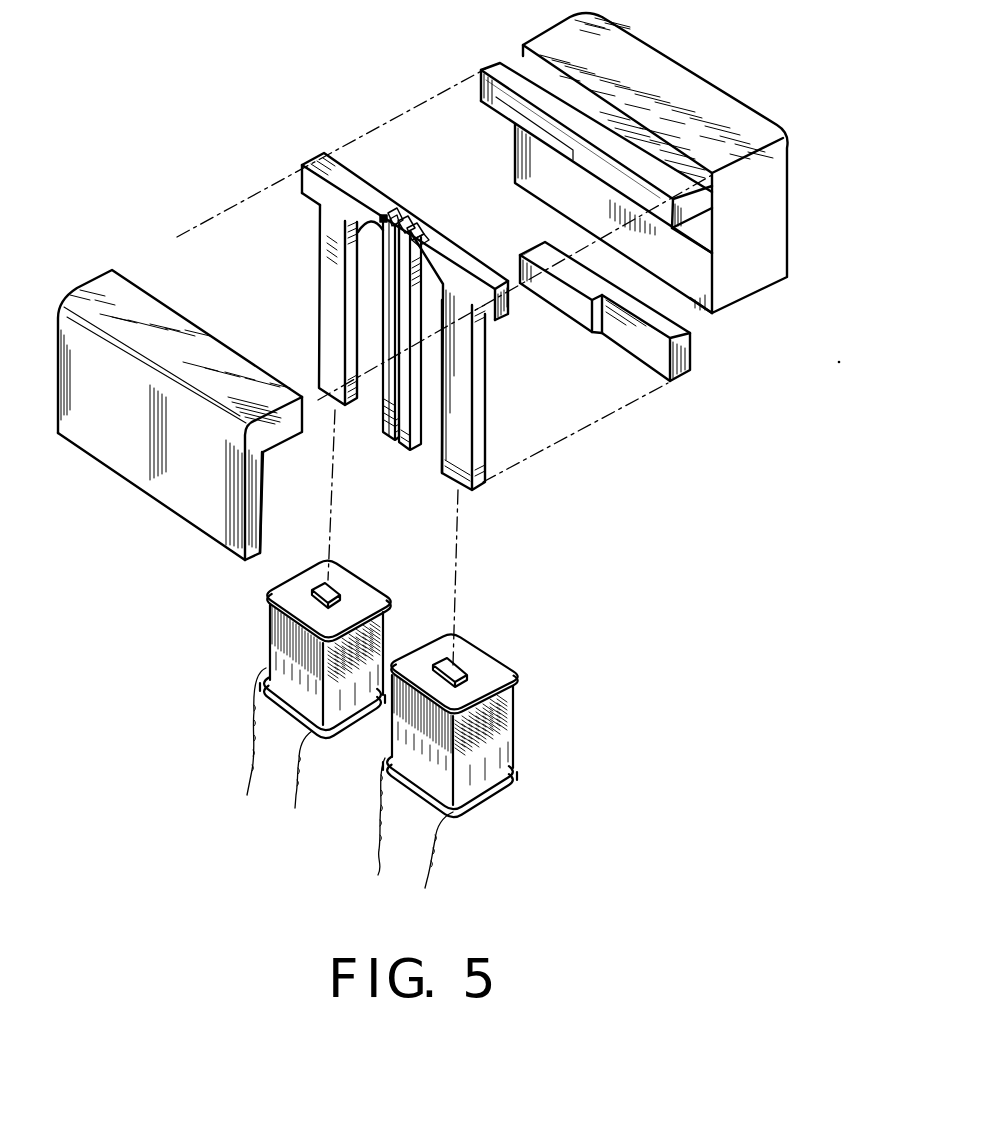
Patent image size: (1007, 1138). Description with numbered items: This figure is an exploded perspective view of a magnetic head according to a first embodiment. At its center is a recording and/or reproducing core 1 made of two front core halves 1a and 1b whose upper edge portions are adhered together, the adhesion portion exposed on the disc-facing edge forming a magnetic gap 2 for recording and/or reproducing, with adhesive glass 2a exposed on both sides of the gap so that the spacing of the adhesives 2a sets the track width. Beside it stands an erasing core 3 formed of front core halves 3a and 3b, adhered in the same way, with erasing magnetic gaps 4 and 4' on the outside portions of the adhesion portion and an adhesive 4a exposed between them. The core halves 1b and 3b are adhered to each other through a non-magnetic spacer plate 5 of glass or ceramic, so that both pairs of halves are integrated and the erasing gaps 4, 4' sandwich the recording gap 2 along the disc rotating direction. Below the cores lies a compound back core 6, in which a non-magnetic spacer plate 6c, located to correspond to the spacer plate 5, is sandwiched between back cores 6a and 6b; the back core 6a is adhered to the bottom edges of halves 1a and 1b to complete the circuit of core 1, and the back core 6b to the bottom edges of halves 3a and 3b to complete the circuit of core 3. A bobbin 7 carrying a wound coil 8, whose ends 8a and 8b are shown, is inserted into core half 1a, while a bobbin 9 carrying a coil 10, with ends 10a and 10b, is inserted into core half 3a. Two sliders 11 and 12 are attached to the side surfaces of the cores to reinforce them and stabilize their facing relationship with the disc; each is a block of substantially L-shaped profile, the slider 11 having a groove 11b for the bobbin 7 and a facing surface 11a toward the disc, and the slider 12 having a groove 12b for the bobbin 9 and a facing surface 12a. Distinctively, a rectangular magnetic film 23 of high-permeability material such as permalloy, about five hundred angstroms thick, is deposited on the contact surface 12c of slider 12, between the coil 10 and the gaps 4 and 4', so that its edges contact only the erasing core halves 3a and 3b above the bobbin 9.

The recording and/or reproducing core 1 is at (466, 371).
The front core half 1a is at (467, 385).
The front core half 1b is at (400, 450).
The magnetic gap 2 is at (418, 228).
The adhesive 2a is at (428, 233).
The erasing core 3 is at (386, 295).
The front core half 3a is at (322, 300).
The front core half 3b is at (382, 437).
The magnetic gap 4 is at (374, 186).
The magnetic gap 4' is at (403, 195).
The adhesive 4a is at (383, 214).
The spacer plate 5 is at (407, 224).
The compound back core 6 is at (612, 311).
The back core 6a is at (625, 343).
The back core 6b is at (544, 242).
The spacer plate 6c is at (585, 320).
The bobbin 7 is at (475, 645).
The coil 8 is at (459, 758).
The coil lead wire 8a is at (430, 866).
The coil lead wire 8b is at (379, 831).
The bobbin 9 is at (352, 580).
The coil 10 is at (295, 680).
The coil lead wire 10a is at (297, 803).
The coil lead wire 10b is at (248, 776).
The slider 11 is at (189, 415).
The facing surface 11a is at (190, 338).
The groove 11b is at (262, 507).
The slider 12 is at (647, 176).
The facing surface 12a is at (658, 62).
The groove 12b is at (698, 278).
The contact surface 12c is at (711, 228).
The magnetic film 23 is at (513, 113).